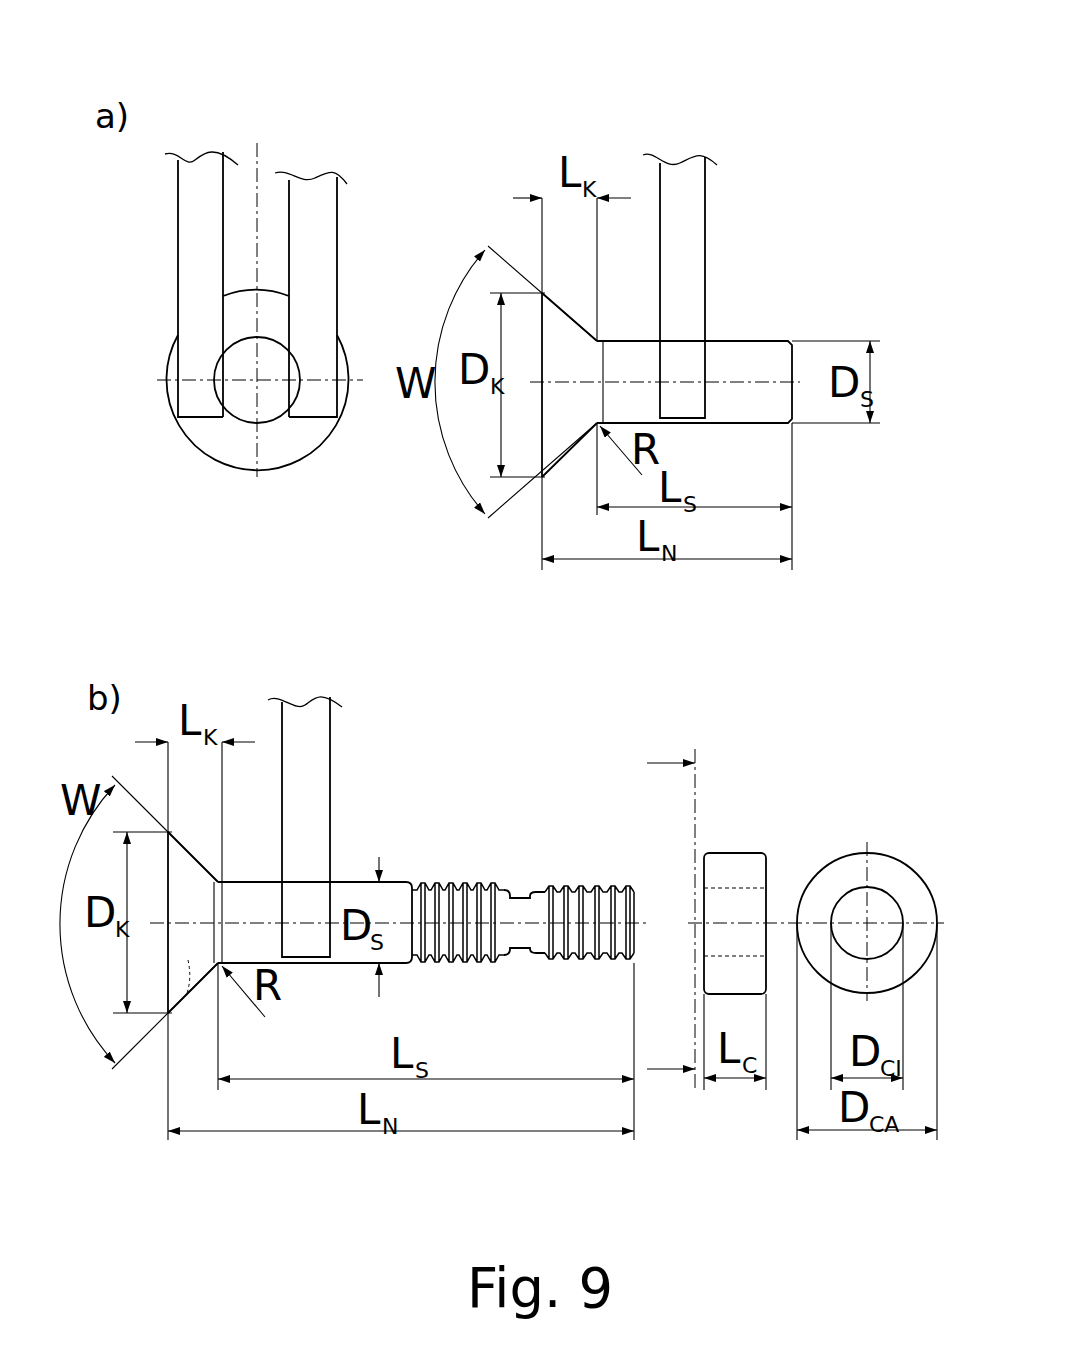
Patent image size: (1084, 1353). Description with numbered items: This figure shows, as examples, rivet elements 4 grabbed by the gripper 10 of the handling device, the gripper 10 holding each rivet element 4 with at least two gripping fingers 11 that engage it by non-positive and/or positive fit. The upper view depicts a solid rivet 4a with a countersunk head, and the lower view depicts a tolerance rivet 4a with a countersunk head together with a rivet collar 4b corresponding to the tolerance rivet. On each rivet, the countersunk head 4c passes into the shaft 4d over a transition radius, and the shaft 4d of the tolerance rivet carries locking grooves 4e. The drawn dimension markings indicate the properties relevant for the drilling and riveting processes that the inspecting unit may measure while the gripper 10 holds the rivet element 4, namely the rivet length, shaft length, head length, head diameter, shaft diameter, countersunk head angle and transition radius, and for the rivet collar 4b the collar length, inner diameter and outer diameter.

The rivet element 4 is at (608, 135).
The rivet 4a is at (437, 612).
The rivet collar 4b is at (820, 848).
The head 4c is at (222, 442).
The shaft 4d is at (247, 360).
The locking grooves 4e is at (471, 891).
The gripper 10 is at (294, 113).
The gripping fingers 11 is at (307, 190).